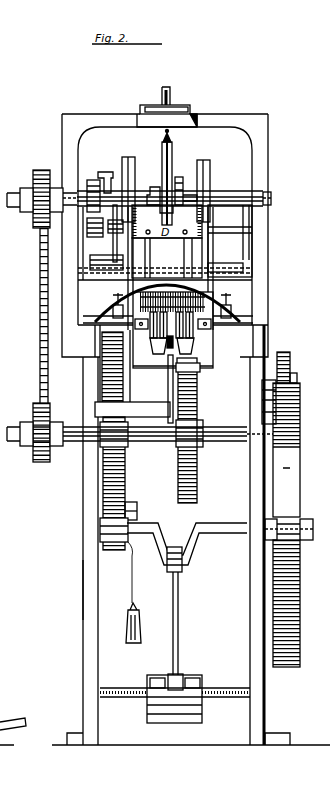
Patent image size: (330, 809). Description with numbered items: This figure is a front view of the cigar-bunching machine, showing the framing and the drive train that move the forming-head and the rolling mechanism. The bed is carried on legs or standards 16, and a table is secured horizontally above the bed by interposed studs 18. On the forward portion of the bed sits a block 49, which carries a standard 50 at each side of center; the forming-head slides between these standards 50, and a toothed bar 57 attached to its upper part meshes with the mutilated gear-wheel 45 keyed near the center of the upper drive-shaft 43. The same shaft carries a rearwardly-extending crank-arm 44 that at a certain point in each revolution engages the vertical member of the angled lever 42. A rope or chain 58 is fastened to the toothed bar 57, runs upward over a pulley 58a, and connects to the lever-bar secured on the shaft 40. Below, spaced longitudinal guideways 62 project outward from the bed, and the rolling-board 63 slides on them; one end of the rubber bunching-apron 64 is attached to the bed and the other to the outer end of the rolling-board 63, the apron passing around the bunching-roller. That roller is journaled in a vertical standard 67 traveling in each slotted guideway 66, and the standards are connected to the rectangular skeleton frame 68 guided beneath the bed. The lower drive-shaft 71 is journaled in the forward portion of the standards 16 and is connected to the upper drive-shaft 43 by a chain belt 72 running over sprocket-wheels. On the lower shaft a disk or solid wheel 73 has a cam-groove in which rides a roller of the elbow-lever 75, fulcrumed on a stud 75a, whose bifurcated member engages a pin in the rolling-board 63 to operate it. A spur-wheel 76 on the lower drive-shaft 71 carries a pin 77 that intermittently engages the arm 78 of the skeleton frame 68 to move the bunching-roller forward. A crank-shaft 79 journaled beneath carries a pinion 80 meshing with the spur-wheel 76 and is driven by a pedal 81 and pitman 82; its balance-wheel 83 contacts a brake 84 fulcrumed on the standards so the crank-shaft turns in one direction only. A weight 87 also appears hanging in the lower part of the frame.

The legs or standards 16 is at (253, 327).
The studs 18 is at (70, 590).
The shaft 40 is at (225, 232).
The angled lever 42 is at (105, 206).
The upper drive-shaft 43 is at (151, 189).
The crank-arm 44 is at (104, 171).
The mutilated gear-wheel 45 is at (112, 262).
The block 49 is at (165, 246).
The standards 50 is at (127, 161).
The toothed bar 57 is at (173, 155).
The rope or chain 58 is at (167, 258).
The pulley 58a is at (172, 96).
The longitudinal guideways 62 is at (262, 383).
The rolling-board 63 is at (203, 341).
The bunching-apron 64 is at (164, 303).
The slotted guideway 66 is at (103, 313).
The vertical standard 67 is at (117, 303).
The skeleton frame 68 is at (301, 410).
The lower drive-shaft 71 is at (225, 428).
The belt 72 is at (42, 316).
The disk or solid wheel 73 is at (199, 480).
The elbow-lever 75 is at (183, 392).
The stud 75a is at (132, 409).
The spur-wheel 76 is at (128, 483).
The pin 77 is at (137, 514).
The arm 78 is at (126, 363).
The crank-shaft 79 is at (225, 527).
The pinion 80 is at (116, 560).
The pedal 81 is at (202, 690).
The pitman 82 is at (179, 627).
The balance-wheel 83 is at (299, 497).
The brake 84 is at (289, 362).
The weight 87 is at (128, 626).